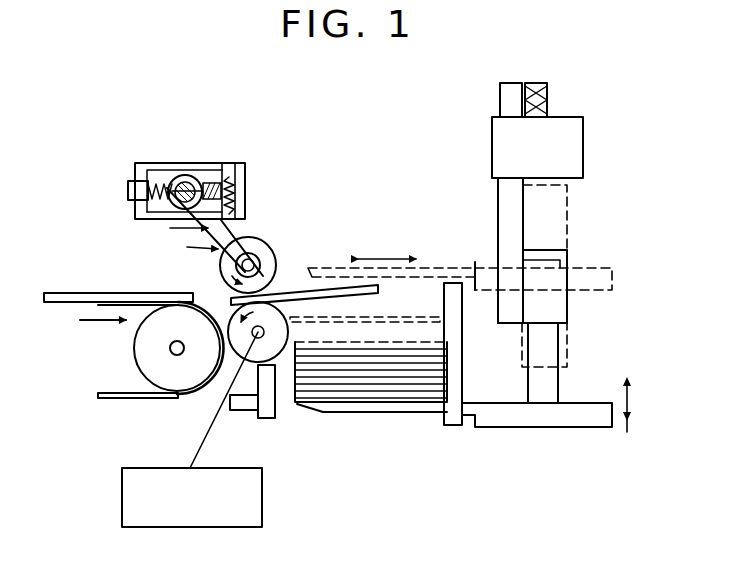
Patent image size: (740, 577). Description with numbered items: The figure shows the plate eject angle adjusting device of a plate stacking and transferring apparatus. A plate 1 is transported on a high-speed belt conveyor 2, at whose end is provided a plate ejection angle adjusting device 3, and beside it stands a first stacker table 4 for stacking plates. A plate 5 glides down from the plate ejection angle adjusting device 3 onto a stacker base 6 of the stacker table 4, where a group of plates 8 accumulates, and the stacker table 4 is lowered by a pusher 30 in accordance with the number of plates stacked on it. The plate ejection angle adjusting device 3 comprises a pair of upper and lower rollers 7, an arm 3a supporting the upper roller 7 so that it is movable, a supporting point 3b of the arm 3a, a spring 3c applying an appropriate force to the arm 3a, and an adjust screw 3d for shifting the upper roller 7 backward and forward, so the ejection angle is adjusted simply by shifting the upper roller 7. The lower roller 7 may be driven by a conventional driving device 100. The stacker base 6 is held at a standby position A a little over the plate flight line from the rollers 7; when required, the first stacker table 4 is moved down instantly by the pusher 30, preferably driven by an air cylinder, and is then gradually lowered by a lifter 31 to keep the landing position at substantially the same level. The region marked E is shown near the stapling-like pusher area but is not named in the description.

The plate 1 is at (57, 292).
The high-speed belt conveyor 2 is at (107, 399).
The plate ejection angle adjusting device 3 is at (152, 162).
The arm 3a is at (205, 236).
The supporting point 3b is at (187, 183).
The spring 3c is at (236, 198).
The adjust screw 3d is at (128, 191).
The first stacker table 4 is at (590, 416).
The plate 5 is at (333, 288).
The stacker base 6 is at (402, 398).
The pair of upper and lower rollers 7 is at (283, 298).
The group of plates 8 is at (313, 392).
The pusher 30 is at (558, 308).
The lifter 31 is at (575, 142).
The driving device 100 is at (264, 497).
The standby position A is at (391, 257).
The stapling position E is at (539, 264).